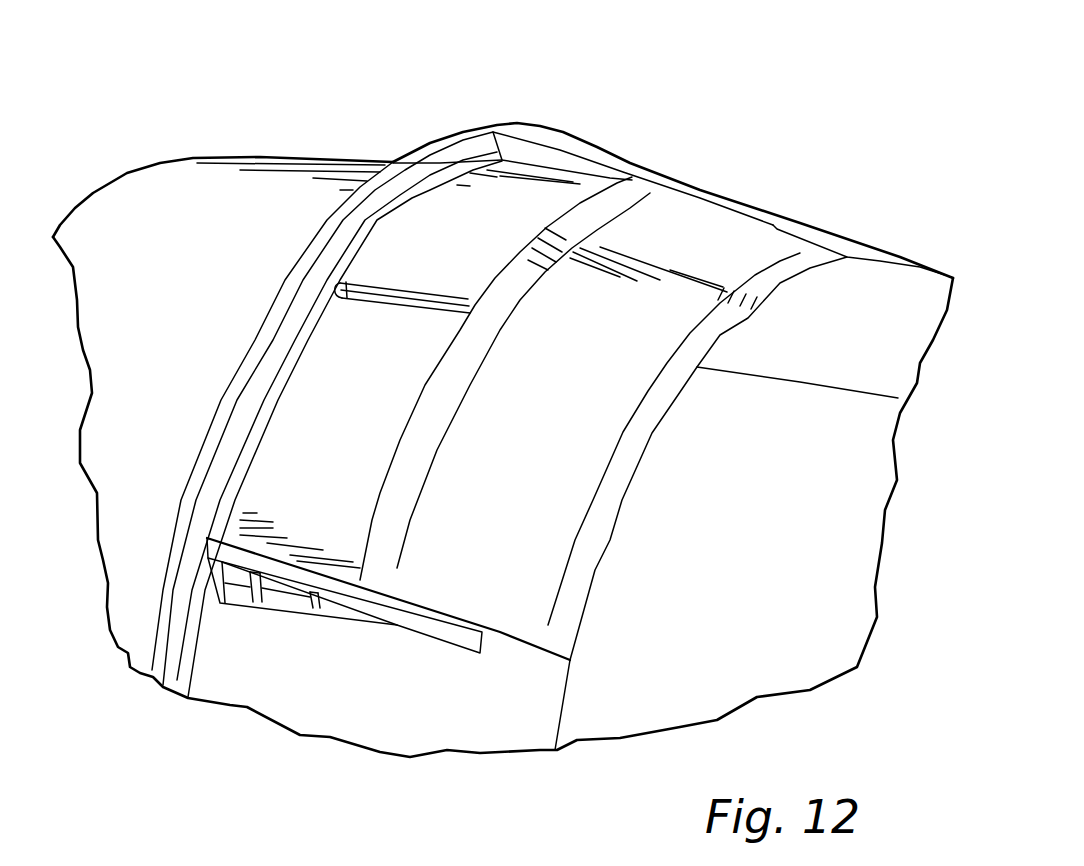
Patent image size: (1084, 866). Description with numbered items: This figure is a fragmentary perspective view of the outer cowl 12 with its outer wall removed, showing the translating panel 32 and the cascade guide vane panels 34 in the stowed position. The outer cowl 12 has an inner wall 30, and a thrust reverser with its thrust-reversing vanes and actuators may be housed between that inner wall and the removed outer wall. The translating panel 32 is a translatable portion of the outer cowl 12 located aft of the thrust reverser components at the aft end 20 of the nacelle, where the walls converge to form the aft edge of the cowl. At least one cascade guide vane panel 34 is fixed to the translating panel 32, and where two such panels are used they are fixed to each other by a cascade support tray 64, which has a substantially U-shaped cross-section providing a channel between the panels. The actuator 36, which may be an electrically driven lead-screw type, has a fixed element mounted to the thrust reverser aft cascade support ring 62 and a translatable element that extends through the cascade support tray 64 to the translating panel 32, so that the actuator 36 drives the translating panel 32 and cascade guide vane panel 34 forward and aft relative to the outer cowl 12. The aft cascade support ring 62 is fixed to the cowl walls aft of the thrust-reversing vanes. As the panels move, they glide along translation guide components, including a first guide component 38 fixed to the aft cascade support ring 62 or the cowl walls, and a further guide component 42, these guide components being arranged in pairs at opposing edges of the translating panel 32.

The outer cowl 12 is at (183, 58).
The aft end 20 is at (563, 700).
The inner wall 30 is at (383, 720).
The translating panel 32 is at (590, 527).
The cascade guide vane panel 34 is at (433, 219).
The actuator 36 is at (400, 287).
The first guide component 38 is at (560, 150).
The translation guide component 42 is at (277, 600).
The thrust reverser aft cascade support ring 62 is at (463, 127).
The cascade support tray 64 is at (371, 297).